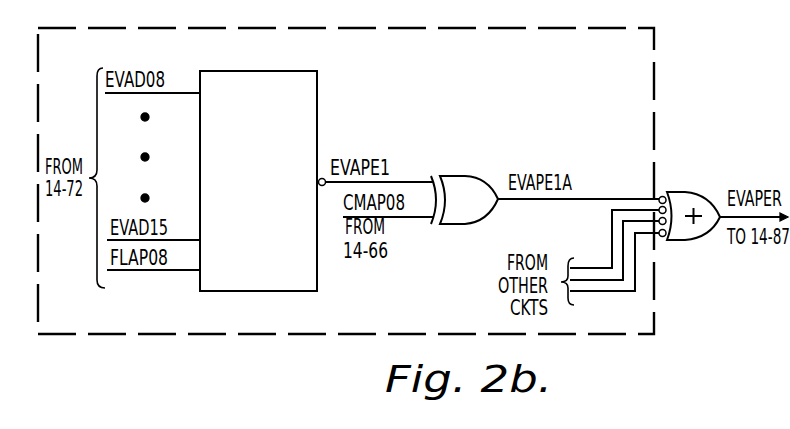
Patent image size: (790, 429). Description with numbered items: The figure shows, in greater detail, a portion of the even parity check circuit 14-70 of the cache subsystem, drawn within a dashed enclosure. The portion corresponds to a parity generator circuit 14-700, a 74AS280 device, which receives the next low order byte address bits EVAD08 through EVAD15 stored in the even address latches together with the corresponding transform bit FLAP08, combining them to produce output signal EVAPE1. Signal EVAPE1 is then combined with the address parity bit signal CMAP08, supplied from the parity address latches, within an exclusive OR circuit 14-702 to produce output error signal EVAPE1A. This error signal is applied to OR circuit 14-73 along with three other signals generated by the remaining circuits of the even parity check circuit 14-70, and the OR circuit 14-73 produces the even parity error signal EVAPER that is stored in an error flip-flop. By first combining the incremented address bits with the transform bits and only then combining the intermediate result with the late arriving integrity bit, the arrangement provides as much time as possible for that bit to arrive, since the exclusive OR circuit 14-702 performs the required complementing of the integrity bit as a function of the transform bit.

The even parity check circuit 14-70 is at (346, 181).
The parity generator circuit 14-700 is at (270, 71).
The exclusive OR circuit 14-702 is at (467, 175).
The OR gate 14-73 is at (690, 192).